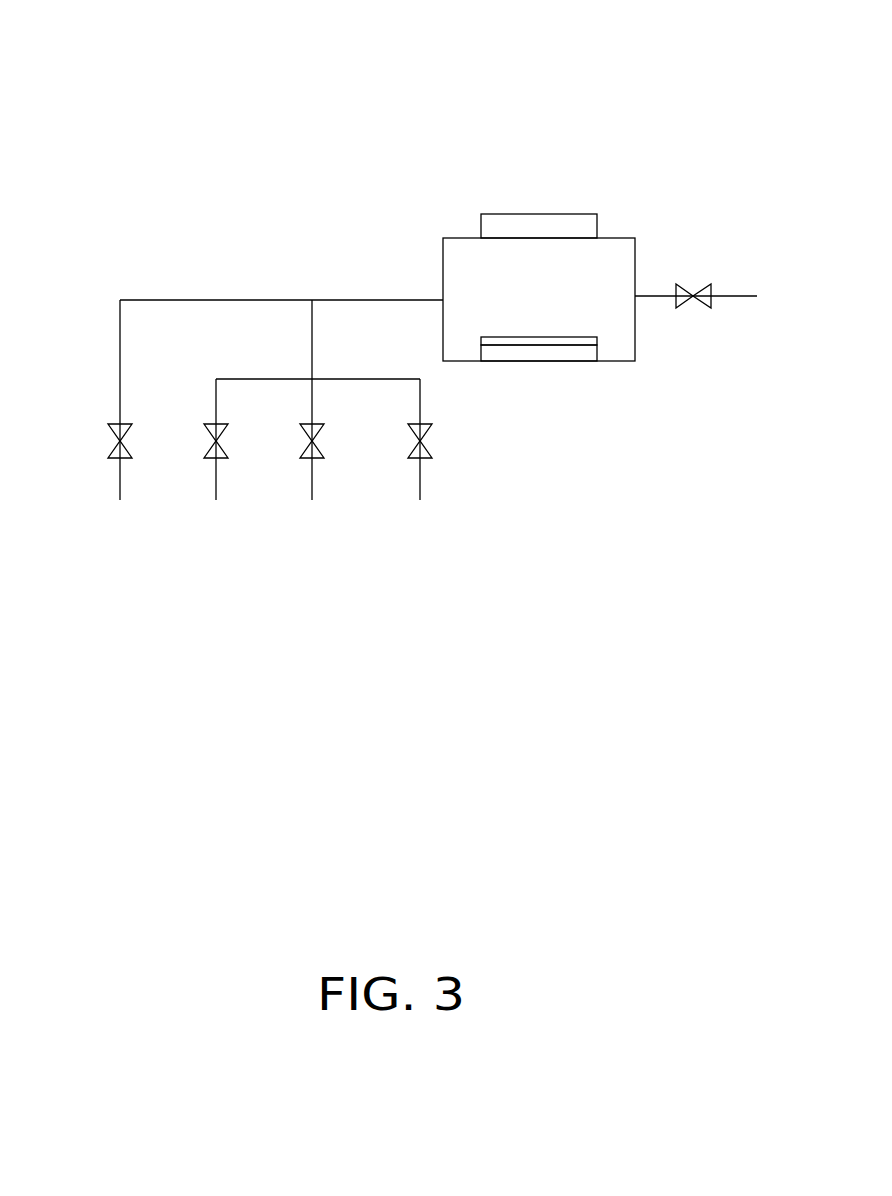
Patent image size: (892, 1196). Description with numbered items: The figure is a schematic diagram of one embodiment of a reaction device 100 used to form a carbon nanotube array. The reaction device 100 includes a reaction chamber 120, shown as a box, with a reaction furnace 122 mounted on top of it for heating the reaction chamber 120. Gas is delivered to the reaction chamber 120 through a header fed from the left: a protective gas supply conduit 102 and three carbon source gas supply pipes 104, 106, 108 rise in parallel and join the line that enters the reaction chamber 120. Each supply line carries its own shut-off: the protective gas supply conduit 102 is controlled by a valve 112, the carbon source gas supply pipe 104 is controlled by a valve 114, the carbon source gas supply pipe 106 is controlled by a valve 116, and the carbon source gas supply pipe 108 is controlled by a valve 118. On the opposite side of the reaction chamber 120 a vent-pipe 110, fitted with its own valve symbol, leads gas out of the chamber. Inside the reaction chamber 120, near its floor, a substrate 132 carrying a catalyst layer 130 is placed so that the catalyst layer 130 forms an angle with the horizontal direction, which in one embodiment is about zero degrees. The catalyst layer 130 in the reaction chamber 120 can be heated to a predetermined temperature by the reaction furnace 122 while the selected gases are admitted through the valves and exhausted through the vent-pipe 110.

The reaction device 100 is at (350, 70).
The protective gas supply conduit 102 is at (117, 471).
The carbon source gas supply pipe 104 is at (213, 471).
The carbon source gas supply pipe 106 is at (309, 471).
The carbon source gas supply pipe 108 is at (417, 471).
The vent-pipe 110 is at (735, 296).
The valve 112 is at (113, 445).
The valve 114 is at (210, 445).
The valve 116 is at (305, 445).
The valve 118 is at (413, 445).
The reaction chamber 120 is at (618, 266).
The reaction furnace 122 is at (564, 226).
The catalyst layer 130 is at (597, 340).
The substrate 132 is at (556, 357).